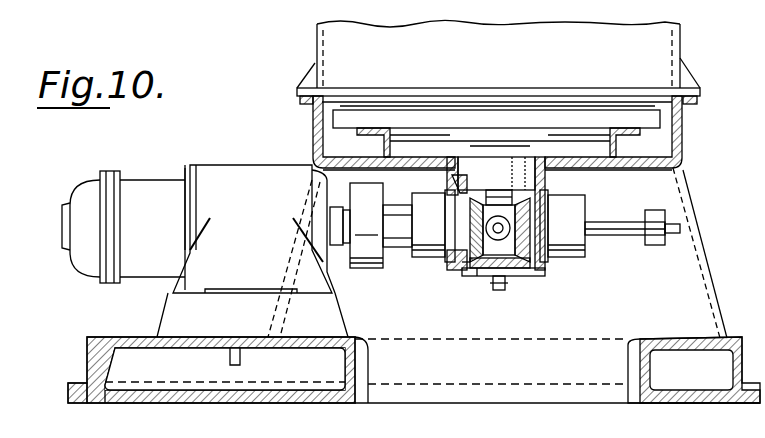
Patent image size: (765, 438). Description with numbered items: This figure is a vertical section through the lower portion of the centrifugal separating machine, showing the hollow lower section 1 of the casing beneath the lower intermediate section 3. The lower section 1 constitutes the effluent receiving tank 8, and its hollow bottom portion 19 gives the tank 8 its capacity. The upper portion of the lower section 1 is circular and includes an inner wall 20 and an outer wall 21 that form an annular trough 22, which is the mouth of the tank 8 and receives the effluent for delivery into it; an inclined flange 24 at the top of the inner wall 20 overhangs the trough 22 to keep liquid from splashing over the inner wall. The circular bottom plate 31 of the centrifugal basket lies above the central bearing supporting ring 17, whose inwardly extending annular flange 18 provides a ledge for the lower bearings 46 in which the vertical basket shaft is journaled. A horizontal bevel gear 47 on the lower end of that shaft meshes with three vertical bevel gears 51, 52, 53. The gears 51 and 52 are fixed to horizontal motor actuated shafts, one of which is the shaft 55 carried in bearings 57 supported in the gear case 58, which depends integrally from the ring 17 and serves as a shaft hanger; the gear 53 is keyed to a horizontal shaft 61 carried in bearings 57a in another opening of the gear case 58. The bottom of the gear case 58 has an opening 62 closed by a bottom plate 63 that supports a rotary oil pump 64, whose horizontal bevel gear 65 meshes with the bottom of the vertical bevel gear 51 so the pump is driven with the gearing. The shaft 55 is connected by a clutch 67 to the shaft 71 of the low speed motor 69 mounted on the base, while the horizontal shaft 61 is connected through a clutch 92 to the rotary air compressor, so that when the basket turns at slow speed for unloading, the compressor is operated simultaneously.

The lower section 1 is at (697, 118).
The lower intermediate section 3 is at (498, 62).
The effluent receiving tank 8 is at (492, 366).
The bearing supporting ring 17 is at (549, 145).
The annular flange 18 is at (455, 158).
The bottom portion 19 is at (207, 400).
The inner wall 20 is at (612, 152).
The outer wall 21 is at (313, 128).
The annular trough 22 is at (500, 149).
The inclined flange 24 is at (630, 130).
The bottom plate 31 is at (437, 115).
The lower bearings 46 is at (496, 213).
The horizontal bevel gear 47 is at (455, 185).
The vertical bevel gear 51 is at (546, 260).
The vertical bevel gear 52 is at (448, 256).
The vertical bevel gear 53 is at (527, 210).
The motor actuated shaft 55 is at (400, 218).
The bearings 57 is at (427, 247).
The bearings 57a is at (578, 240).
The gear case 58 is at (535, 274).
The horizontal shaft 61 is at (627, 222).
The opening 62 is at (515, 280).
The bottom plate 63 is at (477, 277).
The oil pump 64 is at (500, 291).
The horizontal bevel gear 65 is at (462, 276).
The clutch 67 is at (368, 268).
The low speed motor 69 is at (252, 251).
The motor shaft 71 is at (337, 248).
The clutch 92 is at (655, 244).